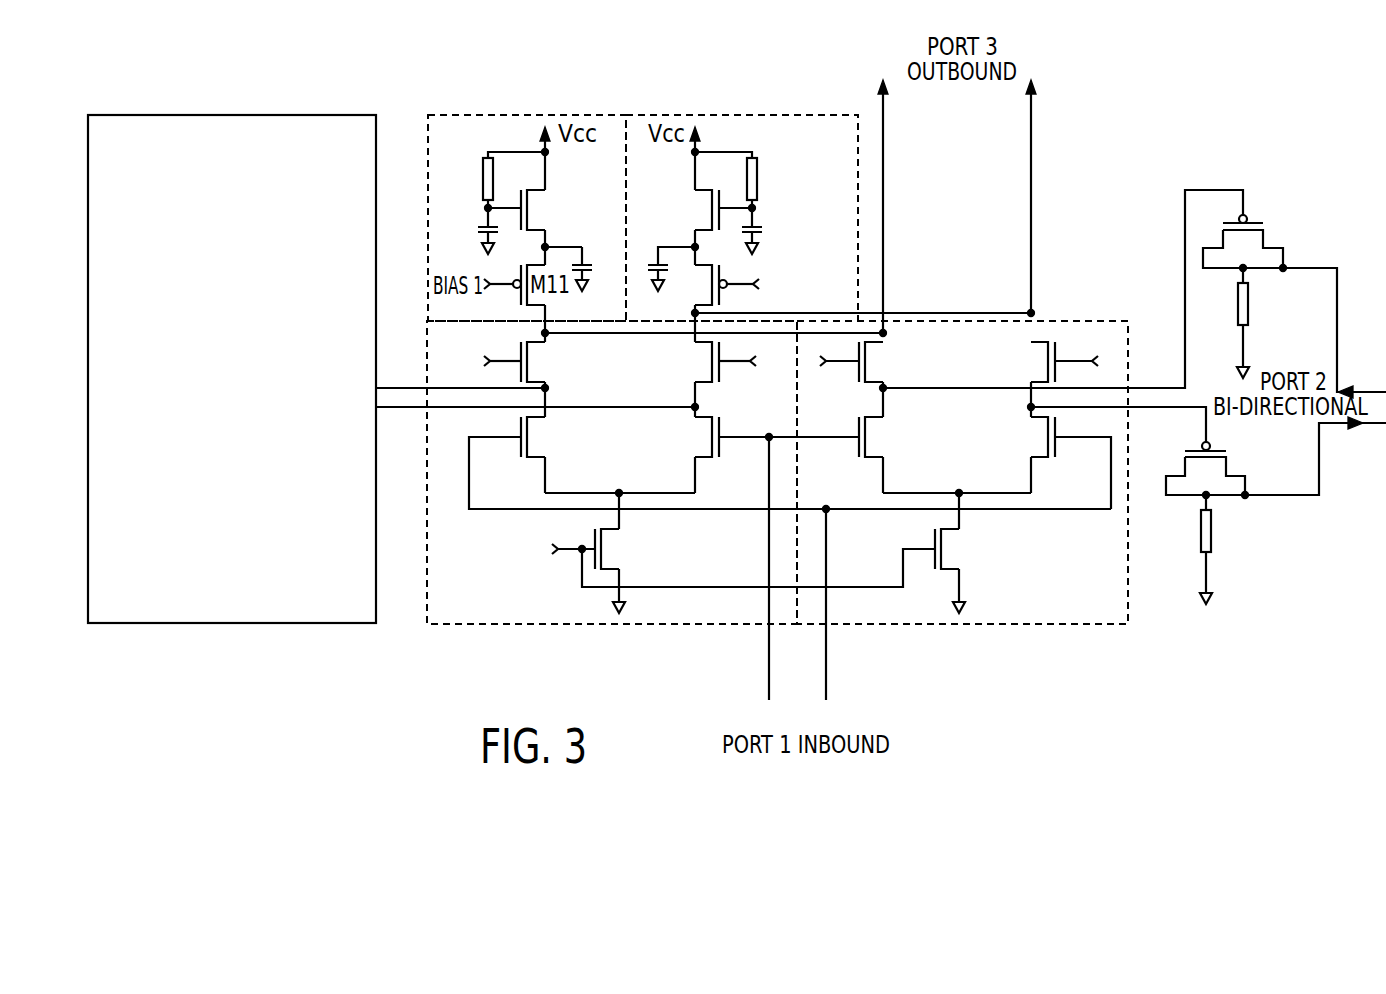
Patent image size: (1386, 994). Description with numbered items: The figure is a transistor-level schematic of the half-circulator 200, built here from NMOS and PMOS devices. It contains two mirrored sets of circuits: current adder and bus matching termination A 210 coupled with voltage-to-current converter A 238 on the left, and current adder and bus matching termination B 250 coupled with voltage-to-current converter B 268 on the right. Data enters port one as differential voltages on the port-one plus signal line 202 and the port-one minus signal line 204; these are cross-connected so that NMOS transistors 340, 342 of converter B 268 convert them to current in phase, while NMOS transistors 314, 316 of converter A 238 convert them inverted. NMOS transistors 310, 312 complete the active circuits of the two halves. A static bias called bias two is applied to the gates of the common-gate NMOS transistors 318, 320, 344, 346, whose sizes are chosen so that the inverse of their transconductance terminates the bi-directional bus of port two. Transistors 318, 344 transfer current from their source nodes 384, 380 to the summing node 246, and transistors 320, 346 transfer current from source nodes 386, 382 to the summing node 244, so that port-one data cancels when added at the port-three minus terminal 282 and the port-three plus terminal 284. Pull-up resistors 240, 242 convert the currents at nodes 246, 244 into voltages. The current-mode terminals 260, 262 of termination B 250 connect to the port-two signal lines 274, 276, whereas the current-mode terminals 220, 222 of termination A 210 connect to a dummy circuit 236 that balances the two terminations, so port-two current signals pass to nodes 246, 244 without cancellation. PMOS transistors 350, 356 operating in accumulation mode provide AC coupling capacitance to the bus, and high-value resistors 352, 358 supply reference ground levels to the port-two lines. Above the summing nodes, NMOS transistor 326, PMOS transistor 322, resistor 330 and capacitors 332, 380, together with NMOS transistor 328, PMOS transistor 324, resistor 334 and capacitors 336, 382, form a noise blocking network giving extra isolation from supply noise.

The half-circulator 200 is at (373, 650).
The port 1 plus signal line 202 is at (768, 665).
The port 1 minus signal line 204 is at (827, 682).
The current adder and bus matching termination A 210 is at (503, 627).
The voltage-to-current converter A 238 is at (549, 672).
The current-mode terminal of termination A 220 is at (423, 385).
The current-mode terminal of termination A 222 is at (423, 410).
The dummy circuit 236 is at (245, 308).
The pull-up resistor 240 is at (513, 113).
The pull-up resistor 242 is at (737, 113).
The summing node 244 is at (690, 313).
The summing node 246 is at (566, 300).
The current adder and bus matching termination B 250 is at (1010, 625).
The voltage-to-current converter B 268 is at (1060, 669).
The current-mode terminal of termination B 260 is at (1135, 385).
The second output line 262 is at (1133, 408).
The port 2 signal line 274 is at (1360, 388).
The port 2 signal line 276 is at (1367, 428).
The port 3 minus terminal 282 is at (880, 80).
The port 3 plus terminal 284 is at (1040, 82).
The NMOS transistor 310 is at (594, 531).
The NMOS transistor 312 is at (939, 529).
The NMOS transistor 314 is at (519, 428).
The NMOS transistor 316 is at (720, 426).
The NMOS transistor 318 is at (519, 353).
The NMOS transistor 320 is at (720, 376).
The PMOS transistor 322 is at (537, 266).
The PMOS transistor 324 is at (722, 273).
The NMOS transistor 326 is at (549, 191).
The NMOS transistor 328 is at (697, 192).
The resistor 330 is at (487, 162).
The capacitor 332 is at (487, 207).
The resistor 334 is at (762, 162).
The capacitor 336 is at (760, 220).
The NMOS transistor 340 is at (856, 440).
The NMOS transistor 342 is at (1056, 447).
The NMOS transistor 344 is at (885, 343).
The NMOS transistor 346 is at (1031, 344).
The PMOS transistor 350 is at (1253, 200).
The resistor 352 is at (1238, 316).
The PMOS transistor 356 is at (1232, 468).
The resistor 358 is at (1200, 532).
The capacitor / source node 380 is at (588, 245).
The capacitor / source node 382 is at (657, 247).
The source node 384 is at (549, 400).
The source node 386 is at (693, 394).